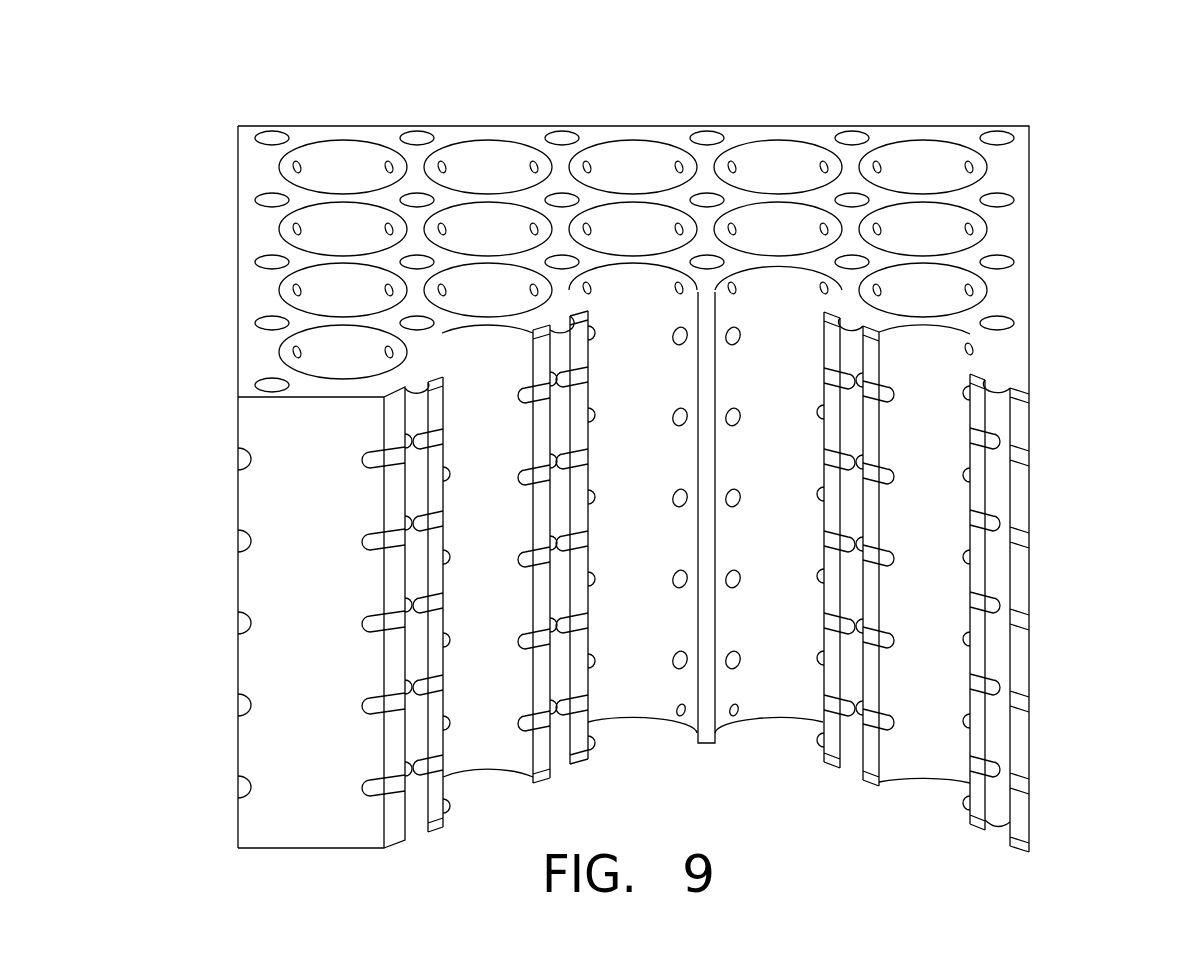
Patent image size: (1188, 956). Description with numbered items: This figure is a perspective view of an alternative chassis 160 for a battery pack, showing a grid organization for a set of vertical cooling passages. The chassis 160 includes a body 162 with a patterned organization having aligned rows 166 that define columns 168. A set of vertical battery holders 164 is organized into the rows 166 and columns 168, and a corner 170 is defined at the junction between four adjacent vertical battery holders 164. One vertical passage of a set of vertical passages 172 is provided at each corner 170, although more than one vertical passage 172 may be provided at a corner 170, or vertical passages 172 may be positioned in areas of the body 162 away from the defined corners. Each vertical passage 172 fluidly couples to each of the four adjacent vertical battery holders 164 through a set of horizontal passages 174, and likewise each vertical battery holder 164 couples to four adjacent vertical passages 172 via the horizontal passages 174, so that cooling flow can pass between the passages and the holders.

The chassis 160 is at (1052, 148).
The body 162 is at (1010, 230).
The vertical battery holder 164 is at (326, 141).
The row 166 is at (230, 167).
The column 168 is at (345, 92).
The corner 170 is at (443, 208).
The vertical passage 172 is at (416, 196).
The horizontal passage 174 is at (573, 548).